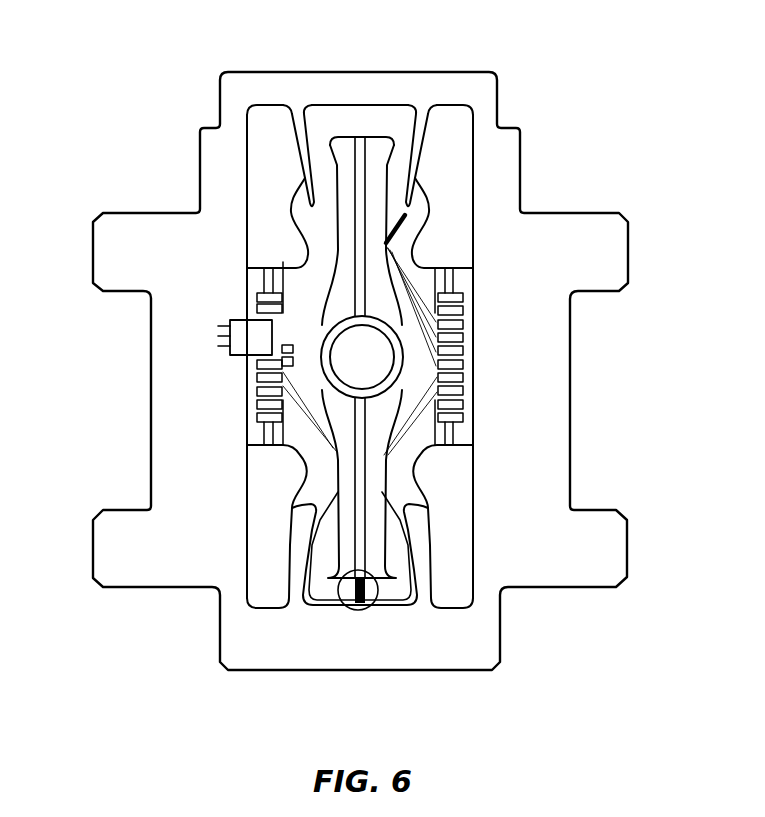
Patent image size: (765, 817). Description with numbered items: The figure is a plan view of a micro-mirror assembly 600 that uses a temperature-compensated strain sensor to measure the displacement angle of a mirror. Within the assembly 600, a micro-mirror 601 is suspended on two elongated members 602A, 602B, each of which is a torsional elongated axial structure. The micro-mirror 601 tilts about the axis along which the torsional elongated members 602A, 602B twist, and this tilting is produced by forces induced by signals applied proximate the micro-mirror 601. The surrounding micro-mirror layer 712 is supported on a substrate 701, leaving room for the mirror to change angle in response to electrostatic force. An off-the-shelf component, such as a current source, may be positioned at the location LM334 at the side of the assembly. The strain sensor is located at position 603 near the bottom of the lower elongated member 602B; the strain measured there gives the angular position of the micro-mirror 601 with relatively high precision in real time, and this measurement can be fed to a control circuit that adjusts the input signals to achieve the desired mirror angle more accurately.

The micro-mirror assembly 600 is at (374, 37).
The micro-mirror 601 is at (378, 366).
The elongated member 602A is at (363, 197).
The elongated member 602B is at (362, 535).
The strain sensor position 603 is at (360, 613).
The micro-mirror layer 712 is at (450, 225).
The substrate 701 is at (571, 393).
The current source location LM334 is at (220, 346).